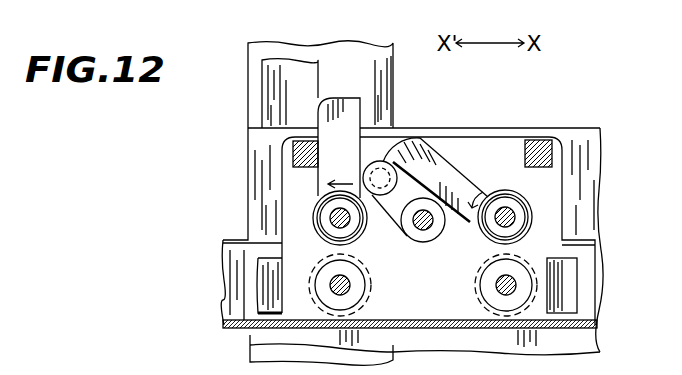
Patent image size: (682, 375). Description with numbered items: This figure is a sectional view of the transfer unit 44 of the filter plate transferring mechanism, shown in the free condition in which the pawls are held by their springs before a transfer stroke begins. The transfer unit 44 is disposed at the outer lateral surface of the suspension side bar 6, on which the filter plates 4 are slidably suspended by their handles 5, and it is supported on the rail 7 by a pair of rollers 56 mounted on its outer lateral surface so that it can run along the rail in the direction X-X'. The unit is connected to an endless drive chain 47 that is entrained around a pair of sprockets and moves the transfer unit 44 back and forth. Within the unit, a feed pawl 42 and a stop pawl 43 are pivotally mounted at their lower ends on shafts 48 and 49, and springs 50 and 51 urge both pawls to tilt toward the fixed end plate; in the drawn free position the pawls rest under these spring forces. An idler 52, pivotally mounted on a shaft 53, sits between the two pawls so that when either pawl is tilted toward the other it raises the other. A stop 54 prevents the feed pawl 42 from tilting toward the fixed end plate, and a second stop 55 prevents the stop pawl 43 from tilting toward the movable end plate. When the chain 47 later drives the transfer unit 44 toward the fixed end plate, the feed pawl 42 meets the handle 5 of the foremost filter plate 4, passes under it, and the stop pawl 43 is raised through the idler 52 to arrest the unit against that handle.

The filter plate 4 is at (332, 60).
The handle 5 is at (273, 62).
The suspension side bar 6 is at (593, 198).
The rail 7 is at (589, 307).
The feed pawl 42 is at (323, 157).
The stop pawl 43 is at (424, 178).
The transfer unit 44 is at (567, 148).
The endless drive chain 47 is at (580, 290).
The shaft 48 is at (351, 226).
The shaft 49 is at (513, 226).
The spring 50 is at (318, 221).
The spring 51 is at (526, 196).
The idler 52 is at (383, 161).
The shaft 53 is at (428, 242).
The stop 54 is at (303, 141).
The stop 55 is at (531, 140).
The roller 56 is at (373, 286).